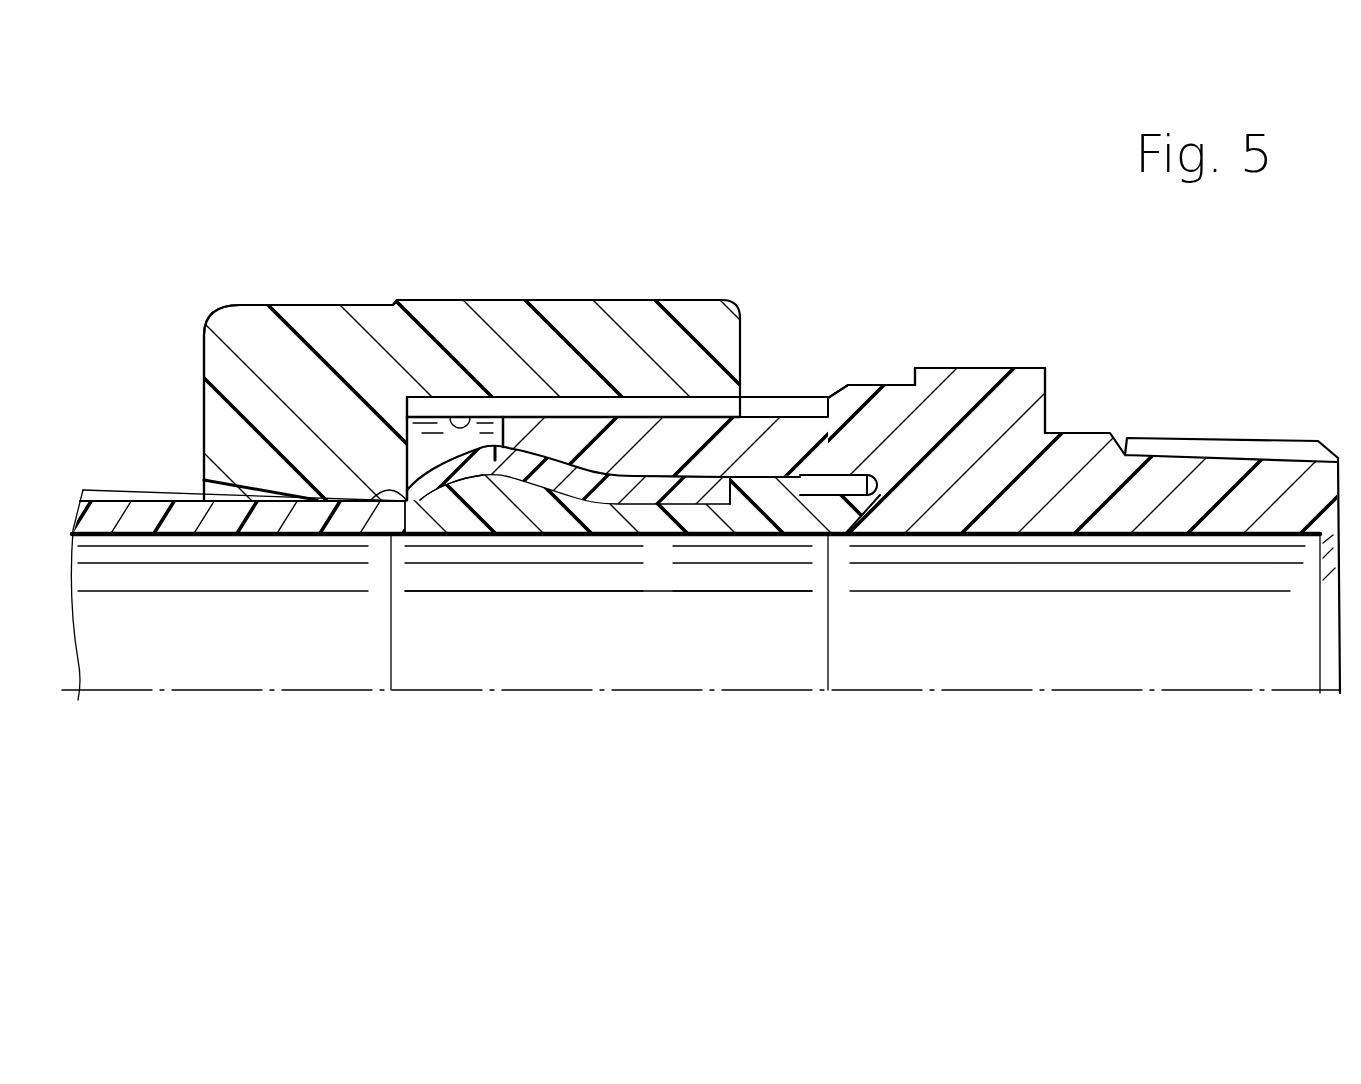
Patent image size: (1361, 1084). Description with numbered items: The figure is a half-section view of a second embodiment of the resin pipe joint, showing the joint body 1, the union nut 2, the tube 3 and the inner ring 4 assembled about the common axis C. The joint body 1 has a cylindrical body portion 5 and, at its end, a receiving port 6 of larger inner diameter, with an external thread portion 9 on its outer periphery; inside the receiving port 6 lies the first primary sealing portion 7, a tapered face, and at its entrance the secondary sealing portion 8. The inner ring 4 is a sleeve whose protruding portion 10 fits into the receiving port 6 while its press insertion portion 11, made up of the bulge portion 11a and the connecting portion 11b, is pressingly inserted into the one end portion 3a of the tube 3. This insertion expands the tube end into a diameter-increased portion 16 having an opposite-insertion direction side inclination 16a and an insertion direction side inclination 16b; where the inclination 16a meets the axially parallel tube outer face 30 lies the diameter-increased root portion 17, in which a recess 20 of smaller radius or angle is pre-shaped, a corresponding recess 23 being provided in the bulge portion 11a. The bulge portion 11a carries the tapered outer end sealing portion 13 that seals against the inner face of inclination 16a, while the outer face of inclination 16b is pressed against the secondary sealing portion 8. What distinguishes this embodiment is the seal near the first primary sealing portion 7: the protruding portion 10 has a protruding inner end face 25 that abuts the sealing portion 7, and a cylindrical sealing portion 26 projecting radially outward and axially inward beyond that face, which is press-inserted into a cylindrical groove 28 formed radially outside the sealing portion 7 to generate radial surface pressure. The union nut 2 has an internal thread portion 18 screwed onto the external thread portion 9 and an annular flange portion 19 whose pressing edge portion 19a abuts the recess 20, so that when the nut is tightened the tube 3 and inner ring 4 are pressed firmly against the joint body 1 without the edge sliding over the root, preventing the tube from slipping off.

The joint body 1 is at (1032, 367).
The union nut 2 is at (394, 294).
The tube 3 is at (108, 496).
The one end portion 3a is at (730, 478).
The inner ring 4 is at (758, 471).
The cylindrical body portion 5 is at (962, 382).
The receiving port 6 is at (645, 438).
The first primary sealing portion 7 is at (803, 500).
The secondary sealing portion 8 is at (547, 520).
The external thread portion 9 is at (805, 475).
The protruding portion 10 is at (763, 500).
The press insertion portion 11 is at (713, 785).
The bulge portion 11a is at (517, 530).
The connecting portion 11b is at (665, 530).
The outer end sealing portion 13 is at (375, 307).
The diameter-increased portion 16 is at (495, 458).
The opposite-insertion direction side inclination 16a is at (467, 443).
The insertion direction side inclination 16b is at (578, 440).
The diameter-increased root portion 17 is at (427, 520).
The internal thread portion 18 is at (497, 418).
The annular flange portion 19 is at (205, 362).
The pressing edge portion 19a is at (483, 520).
The recess 20 is at (395, 495).
The recess 23 is at (398, 503).
The protruding inner end face 25 is at (827, 517).
The cylindrical sealing portion 26 is at (862, 480).
The cylindrical groove 28 is at (913, 540).
The tube outer face 30 is at (157, 500).
The axis C is at (1290, 693).